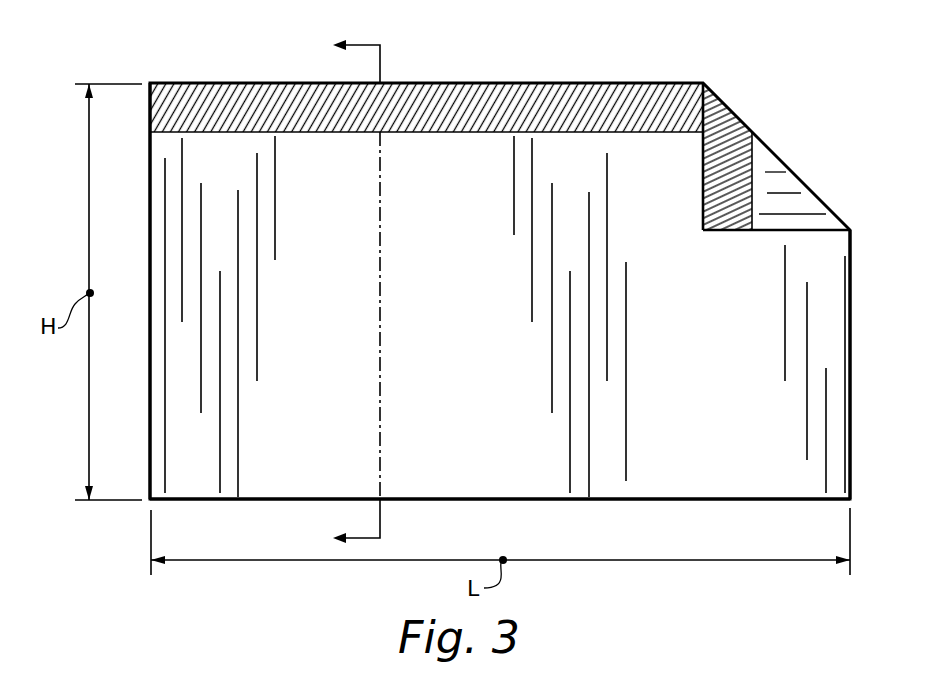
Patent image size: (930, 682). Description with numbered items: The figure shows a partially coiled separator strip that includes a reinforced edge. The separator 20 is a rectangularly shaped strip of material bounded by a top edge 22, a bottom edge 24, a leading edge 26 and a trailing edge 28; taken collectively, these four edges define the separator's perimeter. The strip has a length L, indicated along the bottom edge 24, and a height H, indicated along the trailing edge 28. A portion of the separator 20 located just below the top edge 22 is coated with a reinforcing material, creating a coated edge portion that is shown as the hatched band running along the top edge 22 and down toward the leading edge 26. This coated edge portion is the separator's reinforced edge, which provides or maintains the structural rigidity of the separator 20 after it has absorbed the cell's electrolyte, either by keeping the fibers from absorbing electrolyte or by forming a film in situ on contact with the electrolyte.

The separator 20 is at (502, 289).
The top edge 22 is at (565, 83).
The bottom edge 24 is at (680, 500).
The leading edge 26 is at (851, 327).
The trailing edge 28 is at (150, 270).